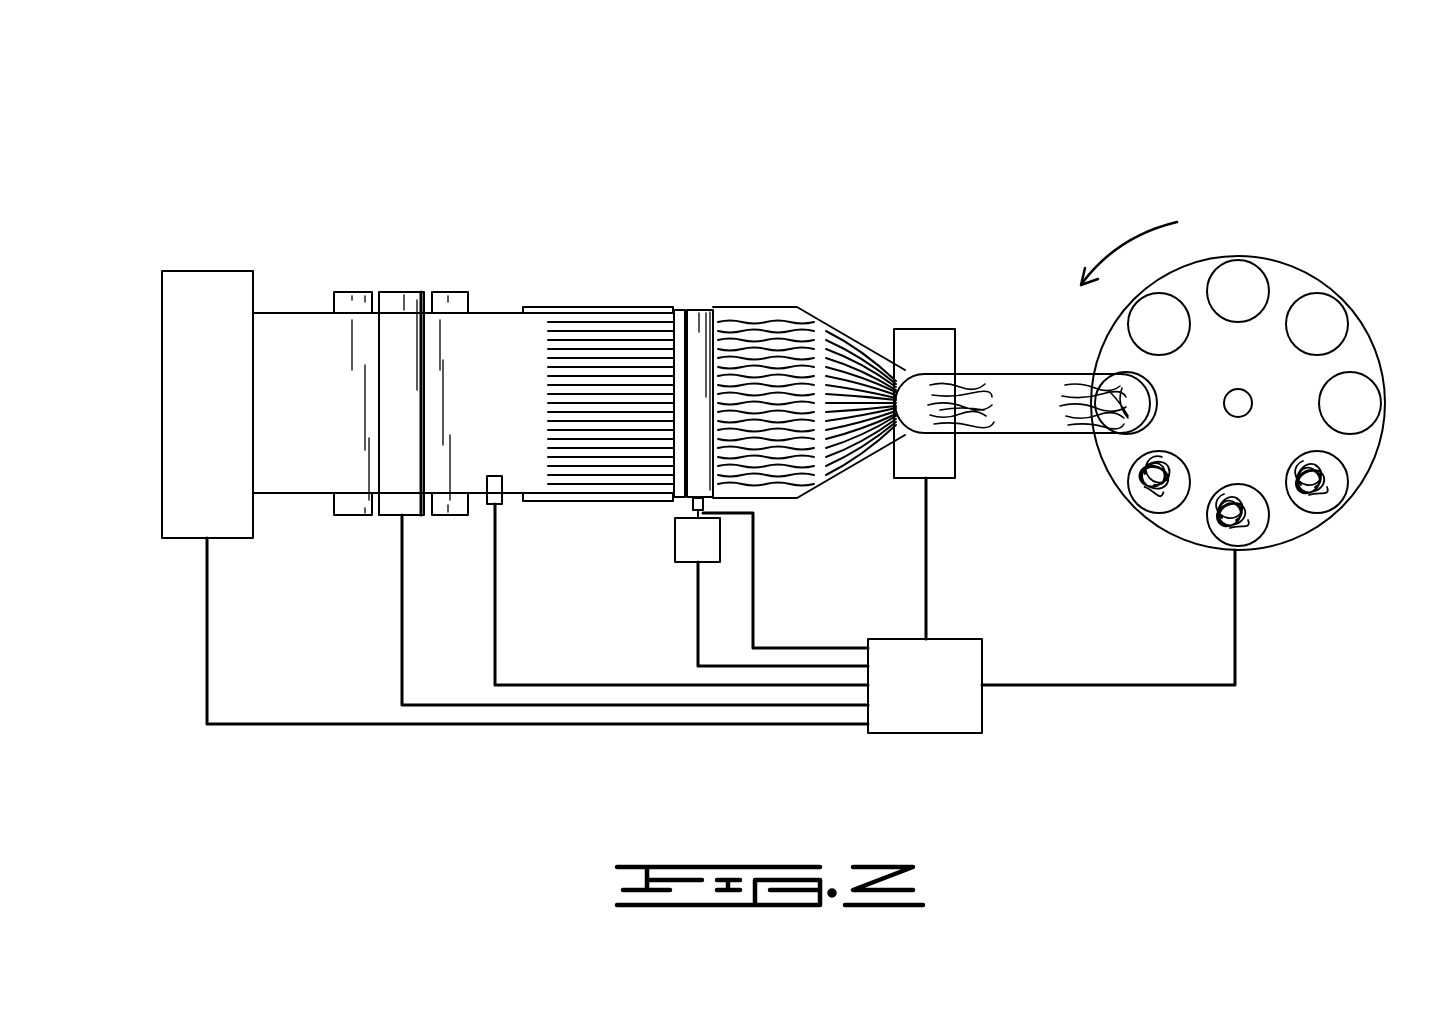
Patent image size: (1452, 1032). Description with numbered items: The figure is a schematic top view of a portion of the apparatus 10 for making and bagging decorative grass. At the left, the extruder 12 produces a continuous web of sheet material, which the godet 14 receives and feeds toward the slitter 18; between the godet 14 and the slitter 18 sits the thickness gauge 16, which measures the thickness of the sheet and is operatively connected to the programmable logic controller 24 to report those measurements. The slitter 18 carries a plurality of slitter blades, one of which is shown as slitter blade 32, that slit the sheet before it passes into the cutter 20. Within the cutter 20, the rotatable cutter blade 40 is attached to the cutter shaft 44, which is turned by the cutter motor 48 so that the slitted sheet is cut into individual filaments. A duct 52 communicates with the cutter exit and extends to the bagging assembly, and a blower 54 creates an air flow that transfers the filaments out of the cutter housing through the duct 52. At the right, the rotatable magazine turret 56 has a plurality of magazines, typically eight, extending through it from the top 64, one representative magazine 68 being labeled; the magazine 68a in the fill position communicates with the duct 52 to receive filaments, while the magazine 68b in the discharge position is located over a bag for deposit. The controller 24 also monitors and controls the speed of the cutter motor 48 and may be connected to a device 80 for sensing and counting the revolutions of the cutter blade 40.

The apparatus for making and bagging decorative grass 10 is at (578, 115).
The extruder 12 is at (190, 270).
The godet 14 is at (412, 292).
The thickness gauge 16 is at (498, 500).
The slitter 18 is at (568, 298).
The cutter 20 is at (778, 307).
The programmable logic controller 24 is at (927, 724).
The slitter blade 32 is at (550, 340).
The cutter blade 40 is at (676, 320).
The cutter shaft 44 is at (690, 322).
The cutter motor 48 is at (684, 552).
The duct 52 is at (1042, 435).
The blower 54 is at (925, 329).
The magazine turret 56 is at (1297, 263).
The top 64 is at (1352, 362).
The magazine 68 is at (1322, 316).
The magazine in the fill position 68a is at (1115, 372).
The magazine in the discharge position 68b is at (1360, 417).
The device for sensing and counting revolutions 80 is at (690, 505).